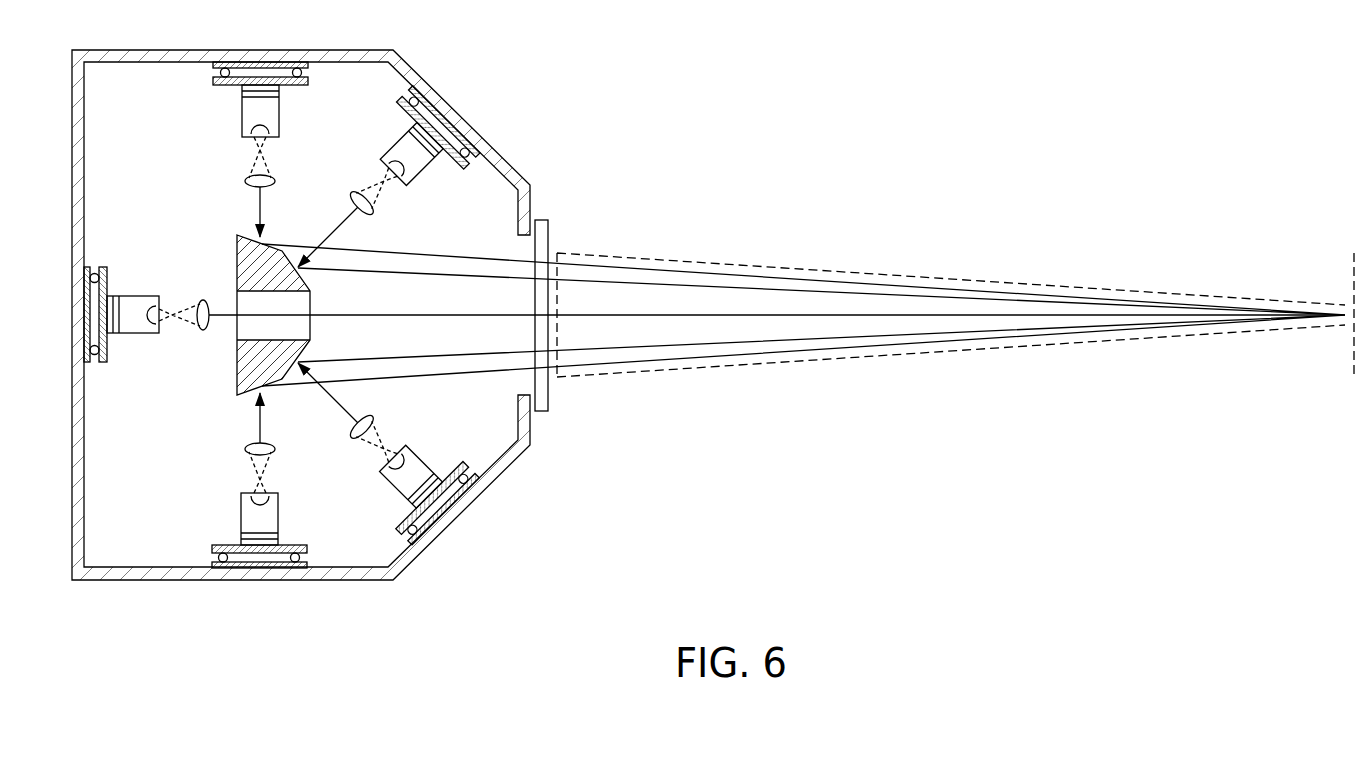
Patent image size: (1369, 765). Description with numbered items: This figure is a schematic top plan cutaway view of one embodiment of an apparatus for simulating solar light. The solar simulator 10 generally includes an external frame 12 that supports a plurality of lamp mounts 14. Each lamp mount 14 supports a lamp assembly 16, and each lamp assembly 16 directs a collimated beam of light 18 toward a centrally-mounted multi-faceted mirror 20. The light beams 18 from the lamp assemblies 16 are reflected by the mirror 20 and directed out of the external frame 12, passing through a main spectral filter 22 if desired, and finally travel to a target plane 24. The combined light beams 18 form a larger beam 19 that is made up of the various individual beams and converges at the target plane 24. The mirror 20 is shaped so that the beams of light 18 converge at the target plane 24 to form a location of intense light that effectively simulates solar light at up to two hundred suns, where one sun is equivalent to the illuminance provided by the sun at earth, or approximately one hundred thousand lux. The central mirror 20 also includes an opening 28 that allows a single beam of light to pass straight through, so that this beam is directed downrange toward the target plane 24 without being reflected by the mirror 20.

The solar simulator 10 is at (563, 88).
The external frame 12 is at (497, 475).
The lamp mount 14 is at (305, 553).
The lamp assembly 16 is at (282, 517).
The collimated beam of light 18 is at (340, 231).
The larger beam 19 is at (1003, 270).
The multi-faceted mirror 20 is at (330, 342).
The main spectral filter 22 is at (553, 237).
The target plane 24 is at (1354, 270).
The opening 28 is at (300, 300).